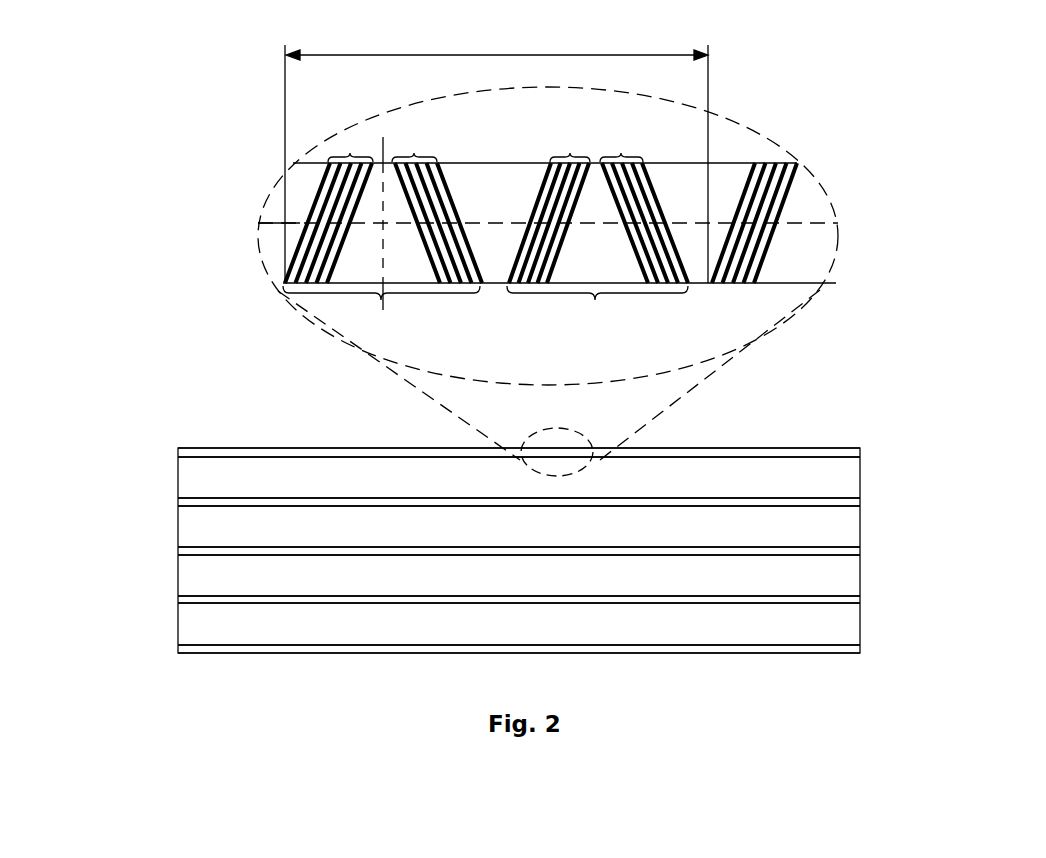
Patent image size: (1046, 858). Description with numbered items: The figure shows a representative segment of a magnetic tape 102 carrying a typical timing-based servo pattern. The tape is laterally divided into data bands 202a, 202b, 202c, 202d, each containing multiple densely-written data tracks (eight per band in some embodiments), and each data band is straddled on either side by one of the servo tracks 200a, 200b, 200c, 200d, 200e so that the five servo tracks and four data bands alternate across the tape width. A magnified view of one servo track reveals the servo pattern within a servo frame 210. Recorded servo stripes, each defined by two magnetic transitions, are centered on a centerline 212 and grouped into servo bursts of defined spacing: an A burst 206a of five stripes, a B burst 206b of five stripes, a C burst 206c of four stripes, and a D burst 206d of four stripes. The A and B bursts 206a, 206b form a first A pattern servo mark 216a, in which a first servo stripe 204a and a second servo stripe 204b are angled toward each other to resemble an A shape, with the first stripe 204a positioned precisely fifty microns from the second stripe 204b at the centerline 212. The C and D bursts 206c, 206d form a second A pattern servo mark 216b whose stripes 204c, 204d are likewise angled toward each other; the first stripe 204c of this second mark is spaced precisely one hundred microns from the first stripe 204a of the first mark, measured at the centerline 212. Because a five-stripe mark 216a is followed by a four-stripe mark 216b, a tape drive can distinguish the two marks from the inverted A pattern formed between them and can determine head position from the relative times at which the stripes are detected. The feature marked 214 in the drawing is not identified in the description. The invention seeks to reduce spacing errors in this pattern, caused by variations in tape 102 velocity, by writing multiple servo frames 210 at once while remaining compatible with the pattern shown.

The magnetic tape 102 is at (236, 393).
The servo track 200a is at (172, 453).
The servo track 200b is at (172, 503).
The servo track 200c is at (172, 552).
The servo track 200d is at (172, 600).
The servo track 200e is at (172, 651).
The data band 202a is at (192, 477).
The data band 202b is at (192, 525).
The data band 202c is at (192, 573).
The data band 202d is at (192, 623).
The first servo stripe 204a is at (286, 284).
The second servo stripe 204b is at (456, 284).
The first servo stripe 204c is at (508, 283).
The servo stripe 204d is at (641, 284).
The A burst 206a is at (353, 148).
The B burst 206b is at (416, 148).
The C burst 206c is at (570, 147).
The D burst 206d is at (623, 147).
The servo frame 210 is at (483, 55).
The centerline 212 is at (281, 222).
The symmetry axis 214 is at (383, 303).
The first A pattern servo mark 216a is at (381, 306).
The second A pattern servo mark 216b is at (597, 307).